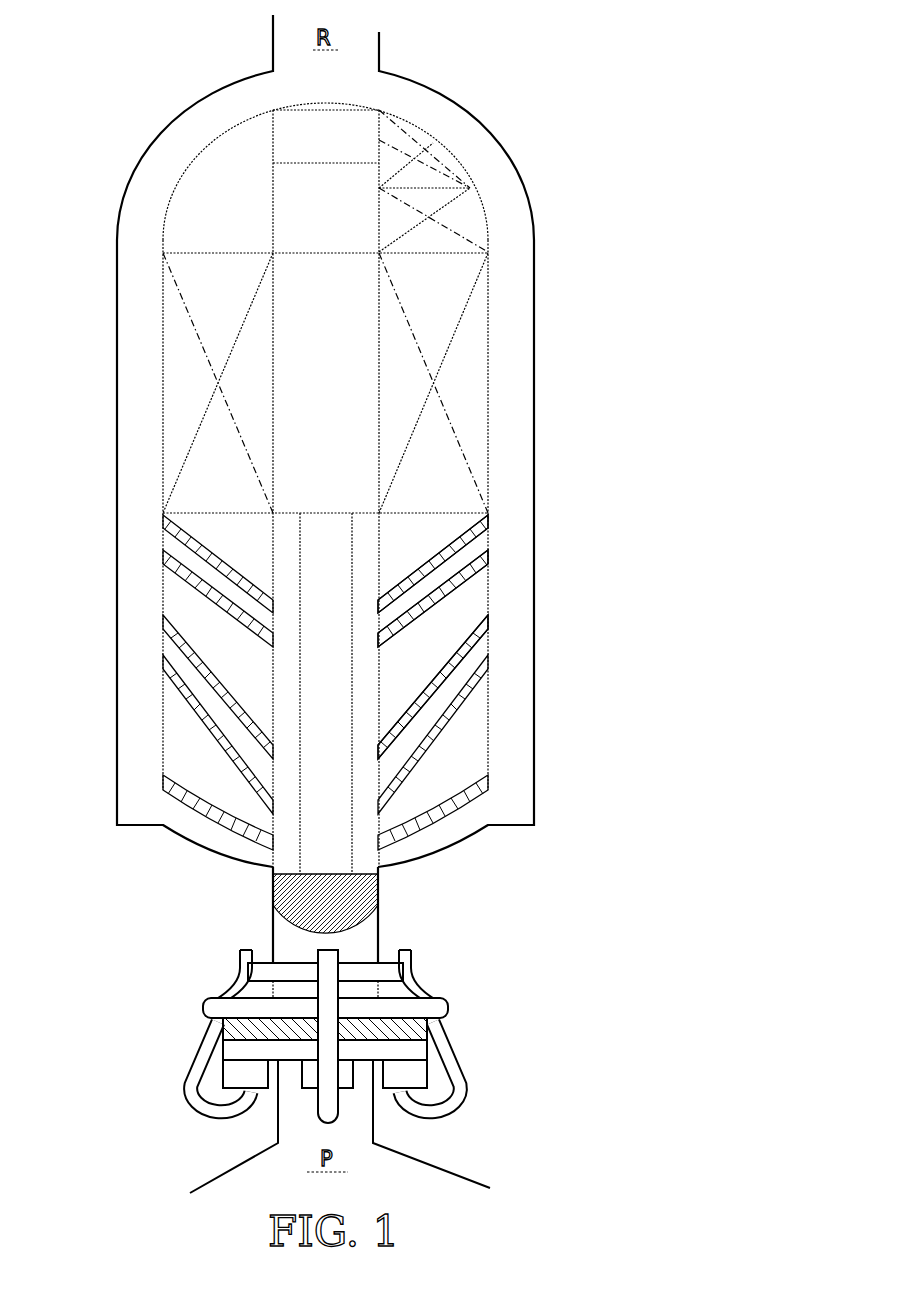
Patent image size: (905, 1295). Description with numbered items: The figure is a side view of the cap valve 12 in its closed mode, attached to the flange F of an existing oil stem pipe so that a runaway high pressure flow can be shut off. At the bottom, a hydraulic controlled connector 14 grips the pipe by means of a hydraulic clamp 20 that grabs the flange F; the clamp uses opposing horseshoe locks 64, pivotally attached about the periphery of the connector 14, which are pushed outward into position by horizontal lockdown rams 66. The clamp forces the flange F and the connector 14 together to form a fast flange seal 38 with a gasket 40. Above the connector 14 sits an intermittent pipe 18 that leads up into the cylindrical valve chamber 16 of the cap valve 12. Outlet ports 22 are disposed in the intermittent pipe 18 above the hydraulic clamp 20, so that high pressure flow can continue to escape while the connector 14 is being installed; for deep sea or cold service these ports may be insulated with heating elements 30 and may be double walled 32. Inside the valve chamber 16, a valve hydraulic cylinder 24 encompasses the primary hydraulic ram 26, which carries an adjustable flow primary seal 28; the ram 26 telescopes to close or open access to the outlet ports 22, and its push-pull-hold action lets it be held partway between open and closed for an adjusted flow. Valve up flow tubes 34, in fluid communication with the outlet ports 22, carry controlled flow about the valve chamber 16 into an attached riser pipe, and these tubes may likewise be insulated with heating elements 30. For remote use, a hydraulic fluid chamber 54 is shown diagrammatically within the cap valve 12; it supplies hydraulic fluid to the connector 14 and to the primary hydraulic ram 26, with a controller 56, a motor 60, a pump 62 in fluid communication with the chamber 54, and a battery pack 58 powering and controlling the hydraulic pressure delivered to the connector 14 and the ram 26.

The cap valve 12 is at (393, 441).
The hydraulic controlled connector 14 is at (313, 1025).
The cylindrical valve chamber 16 is at (385, 537).
The intermittent pipe 18 is at (382, 925).
The hydraulic clamp 20 is at (362, 1033).
The outlet ports 22 is at (177, 663).
The valve hydraulic cylinder 24 is at (345, 410).
The primary hydraulic ram 26 is at (340, 796).
The adjustable flow primary seal 28 is at (273, 895).
The heating elements 30 is at (453, 593).
The double walled 32 is at (475, 620).
The valve up flow tubes 34 is at (517, 397).
The flange seal 38 is at (437, 1028).
The gasket 40 is at (220, 1022).
The hydraulic fluid chamber 54 is at (480, 328).
The controller 56 is at (367, 123).
The battery pack 58 is at (175, 345).
The motor 60 is at (440, 160).
The pump 62 is at (480, 197).
The horseshoe locks 64 is at (463, 1105).
The horizontal lockdown rams 66 is at (385, 972).
The flange F is at (230, 1048).